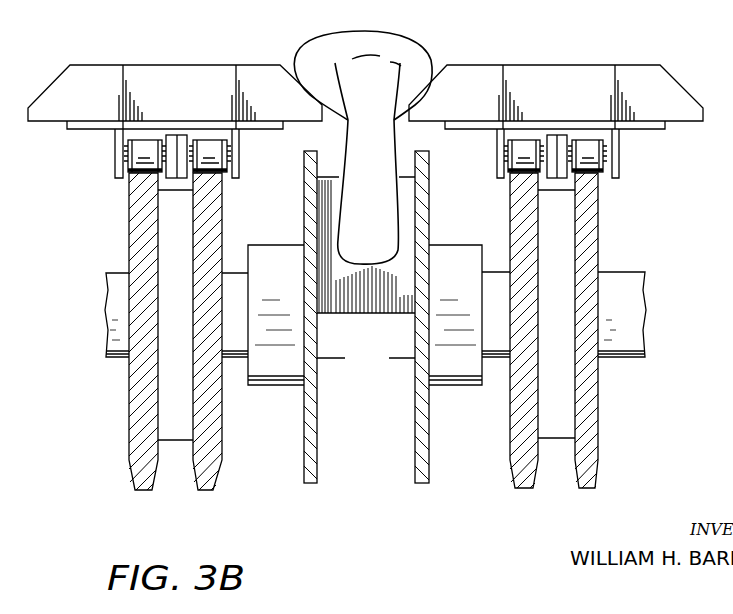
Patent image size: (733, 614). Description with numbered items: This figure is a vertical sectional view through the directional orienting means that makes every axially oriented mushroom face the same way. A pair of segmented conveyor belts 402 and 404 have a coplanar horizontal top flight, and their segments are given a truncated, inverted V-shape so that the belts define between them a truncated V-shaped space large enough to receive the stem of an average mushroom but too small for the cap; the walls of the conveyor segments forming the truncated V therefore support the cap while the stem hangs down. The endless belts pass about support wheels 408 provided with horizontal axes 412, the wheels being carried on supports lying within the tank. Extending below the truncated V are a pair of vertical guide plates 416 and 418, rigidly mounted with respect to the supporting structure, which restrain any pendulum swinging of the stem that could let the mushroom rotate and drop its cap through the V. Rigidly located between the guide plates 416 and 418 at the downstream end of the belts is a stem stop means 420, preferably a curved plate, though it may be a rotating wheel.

The segmented conveyor belt 402 is at (675, 102).
The segmented conveyor belt 404 is at (100, 98).
The support wheel 408 is at (143, 420).
The horizontal axis 412 is at (117, 307).
The vertical guide plate 416 is at (415, 440).
The vertical guide plate 418 is at (303, 448).
The stem stop means 420 is at (375, 295).